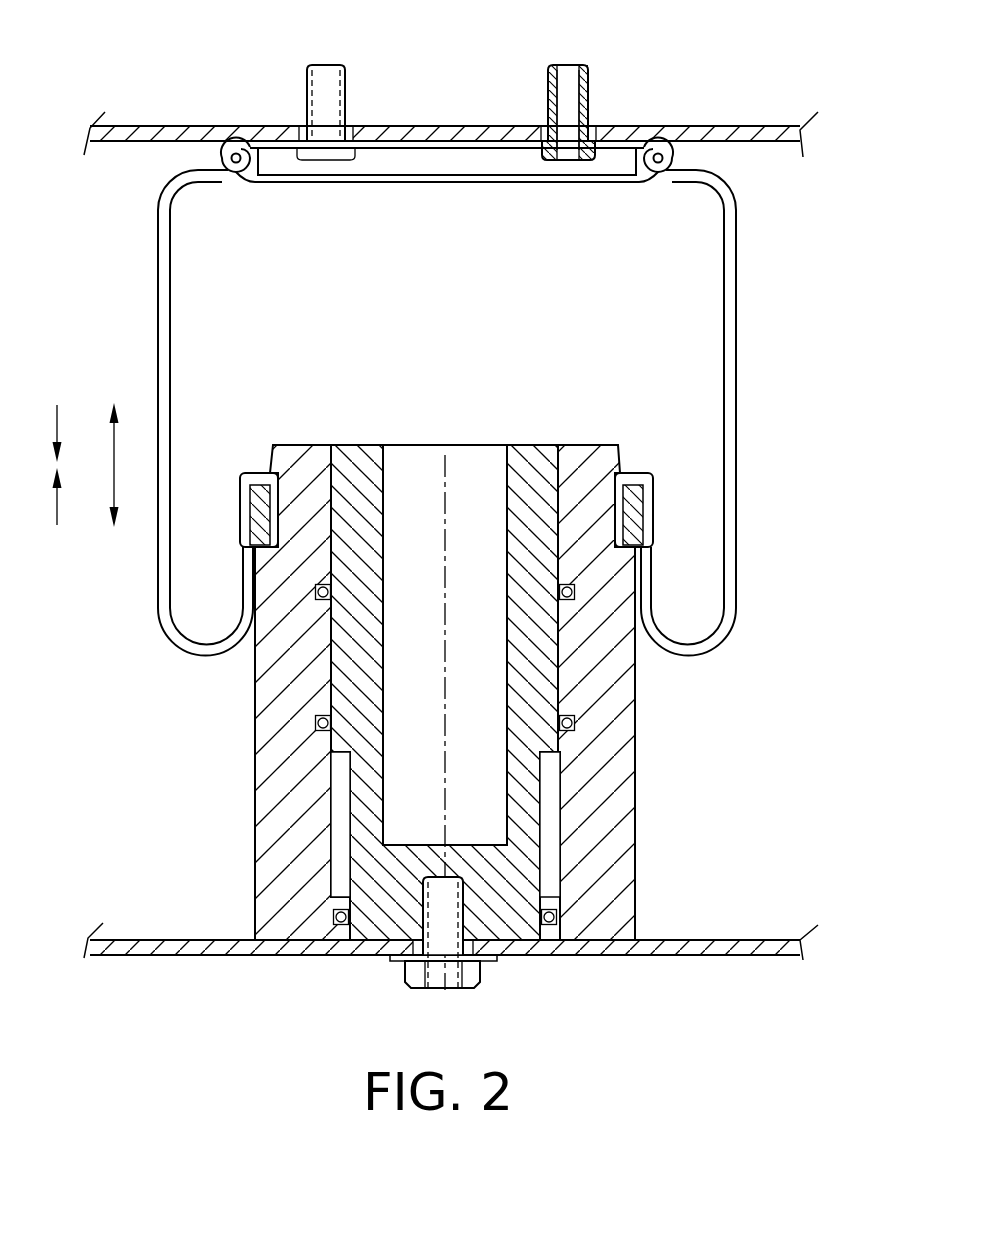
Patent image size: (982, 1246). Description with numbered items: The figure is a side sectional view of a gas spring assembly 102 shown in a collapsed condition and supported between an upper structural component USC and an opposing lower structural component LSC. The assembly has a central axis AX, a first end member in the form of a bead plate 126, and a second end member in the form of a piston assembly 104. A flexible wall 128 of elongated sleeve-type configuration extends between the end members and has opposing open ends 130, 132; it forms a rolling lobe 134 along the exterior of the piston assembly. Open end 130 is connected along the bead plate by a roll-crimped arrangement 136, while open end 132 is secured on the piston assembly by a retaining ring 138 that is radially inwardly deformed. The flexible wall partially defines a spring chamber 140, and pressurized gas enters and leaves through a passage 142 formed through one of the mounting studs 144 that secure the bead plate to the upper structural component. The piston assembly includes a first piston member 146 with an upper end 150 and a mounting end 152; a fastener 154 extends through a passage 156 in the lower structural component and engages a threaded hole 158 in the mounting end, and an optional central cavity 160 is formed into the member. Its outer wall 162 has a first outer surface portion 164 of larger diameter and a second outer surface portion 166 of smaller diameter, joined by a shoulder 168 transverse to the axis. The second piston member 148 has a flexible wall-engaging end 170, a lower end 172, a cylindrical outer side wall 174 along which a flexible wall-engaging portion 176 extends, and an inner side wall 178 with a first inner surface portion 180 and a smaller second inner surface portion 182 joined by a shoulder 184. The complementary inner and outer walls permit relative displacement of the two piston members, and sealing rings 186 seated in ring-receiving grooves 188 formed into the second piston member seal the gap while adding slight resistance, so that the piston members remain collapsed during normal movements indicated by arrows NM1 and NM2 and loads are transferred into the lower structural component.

The gas spring assembly 102 is at (765, 266).
The piston assembly 104 is at (232, 737).
The first bead plate 126 is at (390, 155).
The flexible wall 128 is at (737, 387).
The open end 130 is at (392, 165).
The open end 132 is at (628, 473).
The rolling lobe 134 is at (695, 660).
The roll-crimped arrangement 136 is at (690, 128).
The retaining ring 138 is at (637, 495).
The spring chamber 140 is at (185, 305).
The passage 142 is at (565, 85).
The mounting studs 144 is at (305, 85).
The first piston member 146 is at (414, 452).
The second piston member 148 is at (268, 697).
The first or upper end 150 is at (362, 445).
The second or mounting end 152 is at (387, 915).
The fastener 154 is at (437, 988).
The passage 156 is at (470, 950).
The threaded hole 158 is at (521, 940).
The central cavity or opening 160 is at (487, 450).
The outer surface or wall 162 is at (350, 690).
The first outer surface or wall portion 164 is at (333, 640).
The second outer surface or wall portion 166 is at (351, 810).
The shoulder or engagement wall 168 is at (331, 752).
The first or flexible wall-engaging end 170 is at (242, 432).
The second or lower end 172 is at (218, 918).
The outer side wall or surface 174 is at (254, 820).
The flexible wall-engaging portion 176 is at (298, 473).
The inner side wall or surface 178 is at (308, 849).
The first inner side wall or surface portion 180 is at (330, 785).
The second inner side wall or surface portion 182 is at (331, 897).
The shoulder or engagement wall 184 is at (558, 893).
The sealing rings 186 is at (572, 592).
The ring-receiving grooves 188 is at (317, 592).
The upper structural component USC is at (193, 128).
The lower structural component LSC is at (130, 958).
The central axis AX is at (452, 582).
The arrow NM1 is at (57, 418).
The arrow NM2 is at (112, 465).